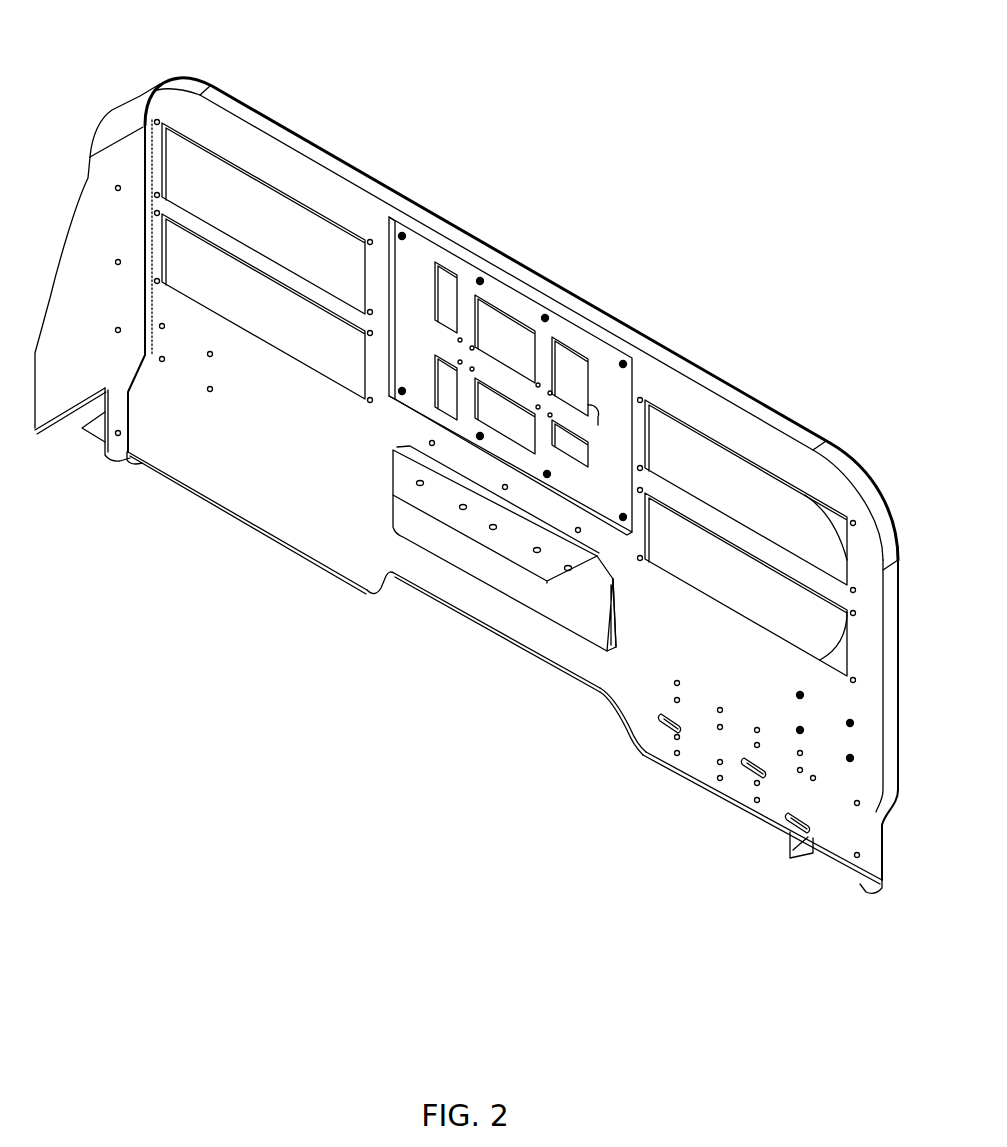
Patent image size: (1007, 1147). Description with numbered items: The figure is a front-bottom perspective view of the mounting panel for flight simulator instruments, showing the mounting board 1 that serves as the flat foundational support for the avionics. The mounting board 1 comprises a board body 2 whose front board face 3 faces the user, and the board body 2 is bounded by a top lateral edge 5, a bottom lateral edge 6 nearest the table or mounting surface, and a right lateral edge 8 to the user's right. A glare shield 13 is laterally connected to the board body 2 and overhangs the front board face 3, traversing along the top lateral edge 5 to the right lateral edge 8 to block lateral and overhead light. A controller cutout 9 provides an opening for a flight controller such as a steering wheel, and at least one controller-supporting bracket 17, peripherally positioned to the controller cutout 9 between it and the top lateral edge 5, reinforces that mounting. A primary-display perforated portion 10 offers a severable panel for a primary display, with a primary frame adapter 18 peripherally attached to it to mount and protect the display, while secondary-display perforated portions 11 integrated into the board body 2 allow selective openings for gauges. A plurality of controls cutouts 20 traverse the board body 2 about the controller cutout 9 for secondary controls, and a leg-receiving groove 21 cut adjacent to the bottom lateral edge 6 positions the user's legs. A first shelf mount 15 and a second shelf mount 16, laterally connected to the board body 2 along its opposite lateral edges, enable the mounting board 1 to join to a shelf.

The mounting board 1 is at (590, 95).
The board body 2 is at (220, 559).
The front board face 3 is at (292, 471).
The top lateral edge 5 is at (240, 117).
The bottom lateral edge 6 is at (302, 553).
The right lateral edge 8 is at (882, 640).
The controller cutout 9 is at (618, 605).
The primary-display perforated portion 10 is at (492, 283).
The secondary-display perforated portions 11 is at (250, 175).
The glare shield 13 is at (130, 117).
The first shelf mount 15 is at (53, 405).
The second shelf mount 16 is at (803, 853).
The controller-supporting bracket 17 is at (552, 573).
The primary frame adapter 18 is at (418, 245).
The controls cutouts 20 is at (673, 730).
The leg-receiving groove 21 is at (408, 632).